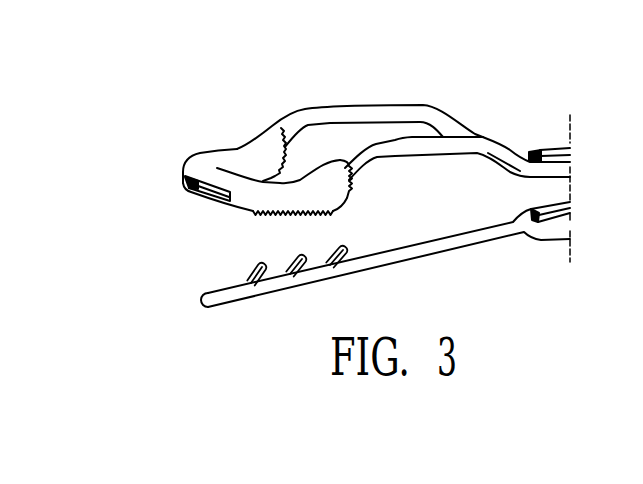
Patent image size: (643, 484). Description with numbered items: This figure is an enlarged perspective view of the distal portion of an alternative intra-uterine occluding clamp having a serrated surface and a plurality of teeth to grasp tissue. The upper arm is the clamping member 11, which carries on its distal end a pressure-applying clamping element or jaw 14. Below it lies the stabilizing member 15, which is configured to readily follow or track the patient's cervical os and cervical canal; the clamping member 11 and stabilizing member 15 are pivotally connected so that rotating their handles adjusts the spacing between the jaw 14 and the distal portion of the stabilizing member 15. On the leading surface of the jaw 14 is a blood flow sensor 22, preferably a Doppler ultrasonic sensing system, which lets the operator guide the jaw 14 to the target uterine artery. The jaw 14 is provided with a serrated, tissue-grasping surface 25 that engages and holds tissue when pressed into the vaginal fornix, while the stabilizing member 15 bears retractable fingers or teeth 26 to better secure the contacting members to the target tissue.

The clamping member 11 is at (440, 112).
The jaw 14 is at (292, 216).
The stabilizing member 15 is at (422, 257).
The blood flow sensor 22 is at (187, 185).
The serrated tissue-grasping surface 25 is at (345, 196).
The retractable fingers or teeth 26 is at (340, 253).